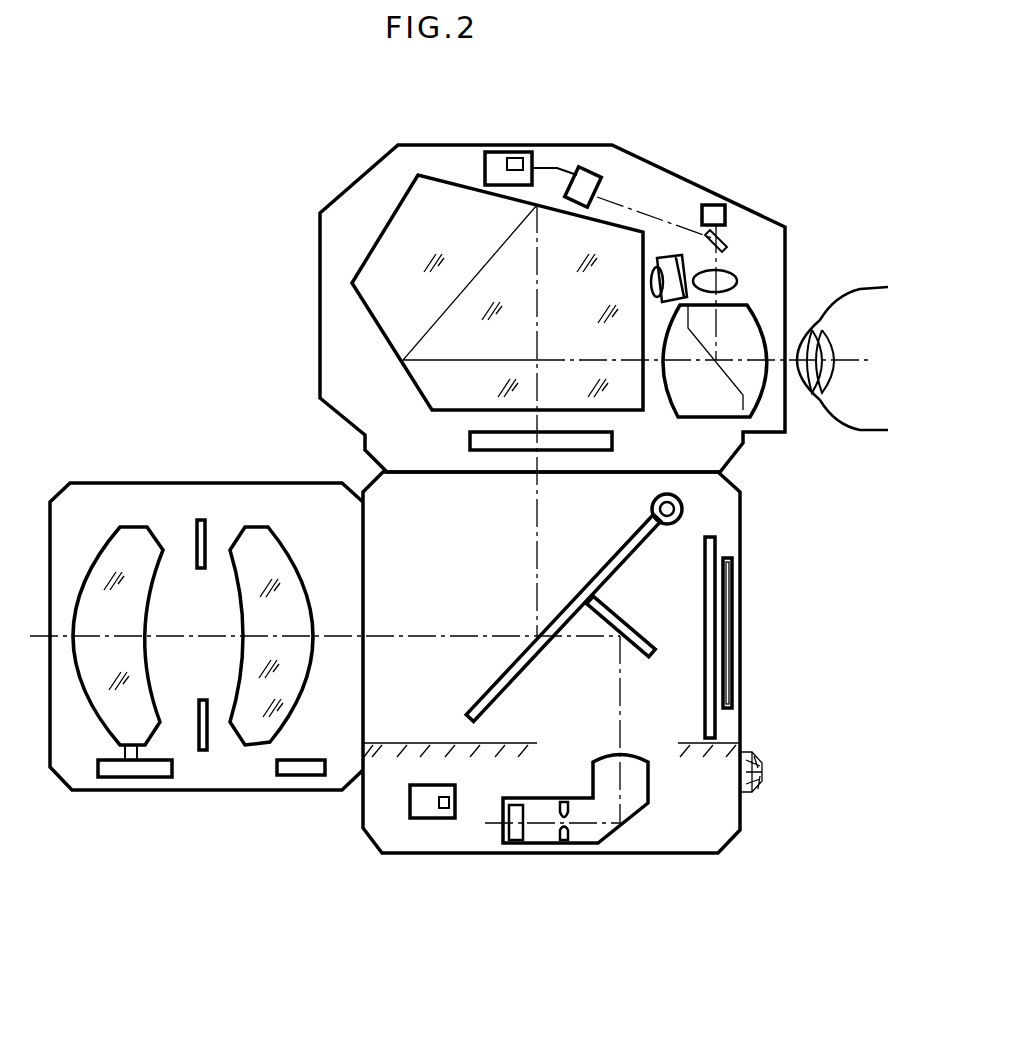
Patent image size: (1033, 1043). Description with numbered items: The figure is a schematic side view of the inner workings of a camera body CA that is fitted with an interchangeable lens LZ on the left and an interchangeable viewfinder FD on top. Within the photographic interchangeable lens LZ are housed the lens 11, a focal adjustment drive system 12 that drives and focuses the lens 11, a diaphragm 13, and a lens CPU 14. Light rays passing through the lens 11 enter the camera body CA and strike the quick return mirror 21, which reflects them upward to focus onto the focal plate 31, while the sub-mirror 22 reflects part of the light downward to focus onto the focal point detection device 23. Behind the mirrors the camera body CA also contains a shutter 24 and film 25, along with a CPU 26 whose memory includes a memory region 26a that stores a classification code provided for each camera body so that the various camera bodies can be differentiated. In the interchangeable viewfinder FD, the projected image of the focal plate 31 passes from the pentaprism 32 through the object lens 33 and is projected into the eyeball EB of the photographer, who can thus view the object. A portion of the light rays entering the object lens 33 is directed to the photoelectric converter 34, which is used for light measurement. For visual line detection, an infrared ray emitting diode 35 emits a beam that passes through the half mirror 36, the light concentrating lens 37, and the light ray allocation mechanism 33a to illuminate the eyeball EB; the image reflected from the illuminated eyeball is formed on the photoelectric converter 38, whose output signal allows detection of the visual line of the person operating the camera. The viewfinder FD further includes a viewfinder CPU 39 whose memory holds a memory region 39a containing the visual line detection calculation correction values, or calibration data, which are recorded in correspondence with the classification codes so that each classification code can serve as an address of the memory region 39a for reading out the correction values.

The lens 11 is at (148, 543).
The focal adjustment drive system 12 is at (137, 770).
The diaphragm 13 is at (203, 727).
The lens CPU 14 is at (293, 770).
The quick return mirror 21 is at (492, 690).
The sub-mirror 22 is at (617, 622).
The focal point detection device 23 is at (532, 832).
The shutter 24 is at (713, 543).
The film 25 is at (730, 653).
The CPU 26 is at (418, 808).
The memory region 26a is at (445, 808).
The focal plate 31 is at (470, 442).
The pentaprism 32 is at (430, 192).
The object lens 33 is at (743, 335).
The light ray allocation mechanism 33a is at (733, 387).
The photoelectric converter 34 is at (670, 267).
The infrared ray emitting diode 35 is at (717, 208).
The half mirror 36 is at (722, 238).
The light concentrating lens 37 is at (728, 278).
The photoelectric converter 38 is at (583, 177).
The viewfinder CPU 39 is at (493, 162).
The memory region 39a is at (518, 157).
The interchangeable viewfinder FD is at (342, 297).
The interchangeable lens LZ is at (283, 502).
The camera body CA is at (707, 823).
The eyeball EB is at (860, 303).